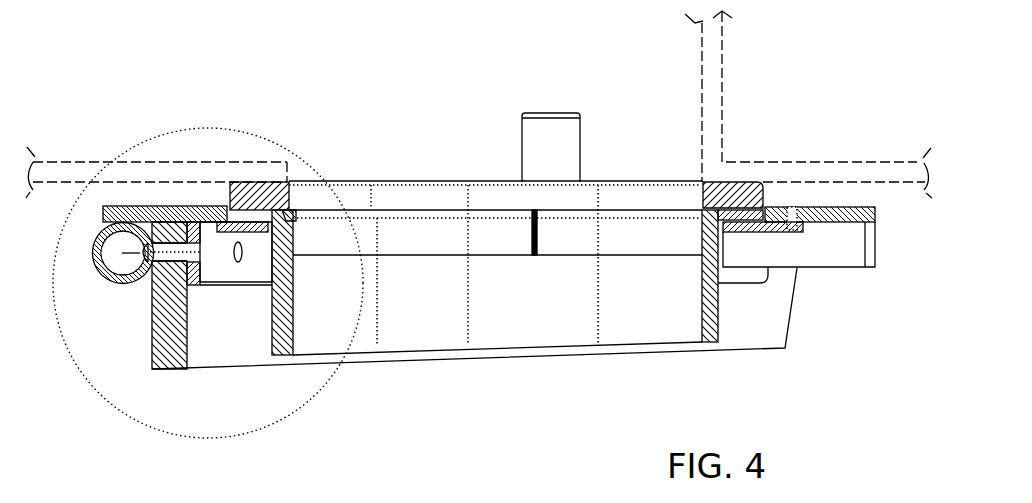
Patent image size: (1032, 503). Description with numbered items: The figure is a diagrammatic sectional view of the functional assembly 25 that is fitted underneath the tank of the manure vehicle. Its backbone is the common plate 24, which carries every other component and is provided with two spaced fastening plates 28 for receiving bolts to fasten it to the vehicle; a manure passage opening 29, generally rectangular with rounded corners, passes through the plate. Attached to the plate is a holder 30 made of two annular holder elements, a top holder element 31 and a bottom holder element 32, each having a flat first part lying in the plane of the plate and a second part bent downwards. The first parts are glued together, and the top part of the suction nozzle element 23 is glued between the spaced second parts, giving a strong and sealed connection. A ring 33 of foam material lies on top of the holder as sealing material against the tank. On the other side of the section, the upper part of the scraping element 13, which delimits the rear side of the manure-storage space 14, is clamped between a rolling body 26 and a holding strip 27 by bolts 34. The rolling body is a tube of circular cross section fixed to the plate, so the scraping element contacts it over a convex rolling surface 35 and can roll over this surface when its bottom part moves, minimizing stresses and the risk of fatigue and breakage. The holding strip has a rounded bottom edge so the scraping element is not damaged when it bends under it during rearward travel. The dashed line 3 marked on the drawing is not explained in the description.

The section line 3 is at (145, 172).
The scraping element 13 is at (167, 357).
The manure-storage space 14 is at (245, 343).
The suction nozzle element 23 is at (713, 307).
The common plate 24 is at (830, 218).
The functional assembly 25 is at (822, 308).
The rolling body 26 is at (108, 276).
The holding strip 27 is at (193, 230).
The fastening plate 28 is at (553, 138).
The manure passage opening 29 is at (438, 240).
The holder 30 is at (718, 213).
The top holder element 31 is at (290, 223).
The bottom holder element 32 is at (250, 220).
The ring of foam material 33 is at (750, 195).
The bolt 34 is at (142, 250).
The rolling surface 35 is at (155, 268).